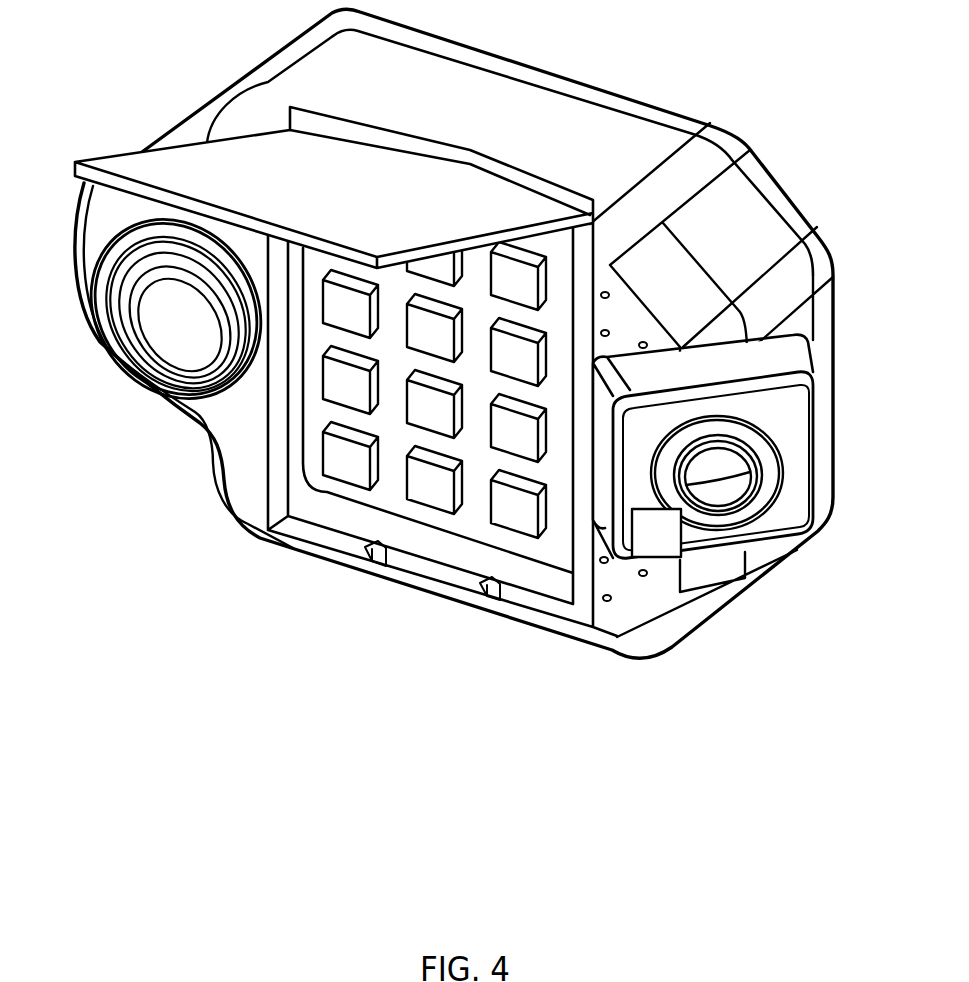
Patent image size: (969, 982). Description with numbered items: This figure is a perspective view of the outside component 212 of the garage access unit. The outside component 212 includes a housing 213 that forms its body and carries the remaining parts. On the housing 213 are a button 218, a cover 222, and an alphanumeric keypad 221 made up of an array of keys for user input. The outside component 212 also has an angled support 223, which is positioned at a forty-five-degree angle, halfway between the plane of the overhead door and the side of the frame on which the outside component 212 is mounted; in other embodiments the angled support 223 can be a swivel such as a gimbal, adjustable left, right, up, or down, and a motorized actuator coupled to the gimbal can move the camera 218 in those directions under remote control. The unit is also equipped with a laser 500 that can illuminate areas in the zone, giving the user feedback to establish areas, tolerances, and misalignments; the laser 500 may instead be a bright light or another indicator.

The outside component 212 is at (697, 82).
The housing 213 is at (770, 187).
The button 218 is at (173, 345).
The alphanumeric keypad 221 is at (430, 423).
The cover 222 is at (177, 162).
The angled support 223 is at (800, 426).
The laser 500 is at (657, 557).